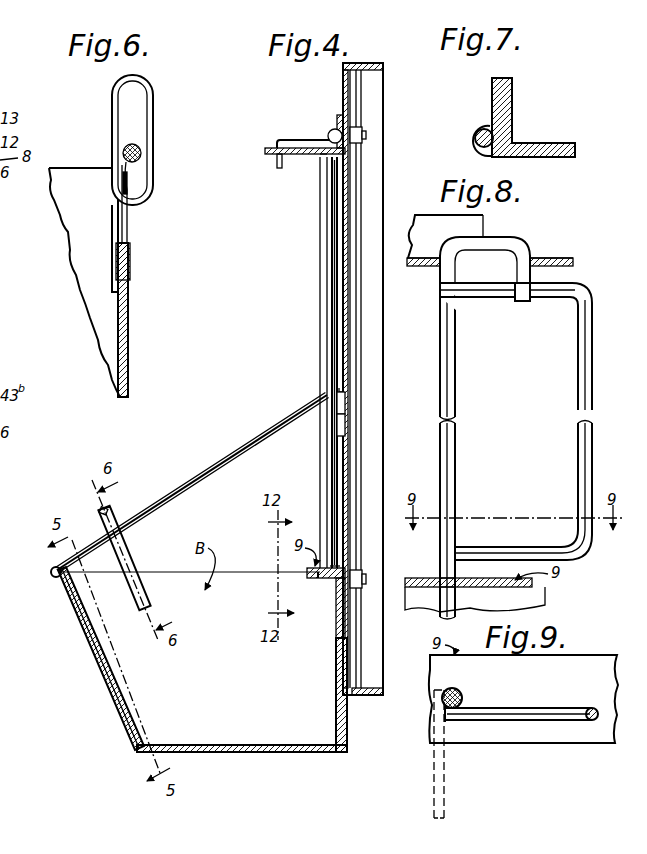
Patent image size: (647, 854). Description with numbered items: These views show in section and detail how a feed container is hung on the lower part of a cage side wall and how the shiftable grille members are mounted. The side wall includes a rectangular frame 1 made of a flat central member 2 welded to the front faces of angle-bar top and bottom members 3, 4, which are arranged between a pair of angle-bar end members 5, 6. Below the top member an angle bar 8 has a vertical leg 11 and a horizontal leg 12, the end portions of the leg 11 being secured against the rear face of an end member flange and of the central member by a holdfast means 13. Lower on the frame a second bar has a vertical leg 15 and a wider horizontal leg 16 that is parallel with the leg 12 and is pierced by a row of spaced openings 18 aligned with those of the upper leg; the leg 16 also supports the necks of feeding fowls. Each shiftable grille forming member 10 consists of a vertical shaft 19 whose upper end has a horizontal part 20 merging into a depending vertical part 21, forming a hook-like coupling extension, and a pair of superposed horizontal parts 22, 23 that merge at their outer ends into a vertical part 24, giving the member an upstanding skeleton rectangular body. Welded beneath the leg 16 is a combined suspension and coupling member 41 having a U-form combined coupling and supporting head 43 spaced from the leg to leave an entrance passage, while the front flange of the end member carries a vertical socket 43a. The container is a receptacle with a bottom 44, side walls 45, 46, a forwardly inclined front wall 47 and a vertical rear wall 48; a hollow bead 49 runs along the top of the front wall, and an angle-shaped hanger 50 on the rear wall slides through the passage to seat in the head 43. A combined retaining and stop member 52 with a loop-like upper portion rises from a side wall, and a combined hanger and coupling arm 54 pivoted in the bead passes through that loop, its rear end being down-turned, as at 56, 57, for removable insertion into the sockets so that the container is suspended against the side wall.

In FIG. 6, the rectangular frame 1 is at (14, 283).
In FIG. 4, the rectangular frame 1 is at (372, 305).
In FIG. 7, the rectangular frame 1 is at (514, 97).
In FIG. 8, the rectangular frame 1 is at (557, 262).
In FIG. 9, the rectangular frame 1 is at (556, 735).
In FIG. 6, the central member 2 is at (113, 333).
In FIG. 4, the top member 3 is at (343, 79).
In FIG. 4, the bottom member 4 is at (368, 697).
In FIG. 4, the end member 5 is at (377, 186).
In FIG. 8, the end member 5 is at (472, 604).
In FIG. 7, the end member 6 is at (512, 113).
In FIG. 4, the bar 8 is at (350, 162).
In FIG. 8, the bar 8 is at (470, 224).
In FIG. 4, the shiftable grille forming member 10 is at (331, 326).
In FIG. 8, the shiftable grille forming member 10 is at (457, 379).
In FIG. 4, the vertical leg 11 is at (352, 125).
In FIG. 8, the vertical leg 11 is at (445, 230).
In FIG. 4, the horizontal leg 12 is at (320, 156).
In FIG. 8, the horizontal leg 12 is at (420, 266).
In FIG. 4, the holdfast means 13 is at (330, 134).
In FIG. 4, the vertical leg 15 is at (355, 580).
In FIG. 8, the vertical leg 15 is at (505, 597).
In FIG. 4, the horizontal leg 16 is at (308, 568).
In FIG. 8, the horizontal leg 16 is at (530, 588).
In FIG. 9, the horizontal leg 16 is at (447, 672).
In FIG. 8, the openings 18 is at (440, 580).
In FIG. 9, the openings 18 is at (464, 705).
In FIG. 4, the vertical shaft 19 is at (333, 352).
In FIG. 8, the vertical shaft 19 is at (450, 340).
In FIG. 9, the vertical shaft 19 is at (460, 693).
In FIG. 4, the horizontal part 20 is at (280, 141).
In FIG. 8, the horizontal part 20 is at (500, 245).
In FIG. 4, the depending vertical part 21 is at (276, 163).
In FIG. 8, the depending vertical part 21 is at (515, 302).
In FIG. 8, the horizontal part 22 is at (555, 290).
In FIG. 8, the horizontal part 23 is at (525, 557).
In FIG. 9, the horizontal part 23 is at (535, 697).
In FIG. 4, the vertical part 24 is at (321, 278).
In FIG. 8, the vertical part 24 is at (580, 368).
In FIG. 9, the vertical part 24 is at (594, 708).
In FIG. 4, the combined suspension and coupling member 41 is at (316, 580).
In FIG. 4, the combined coupling and supporting head 43 is at (332, 580).
In FIG. 4, the socket 43a is at (343, 419).
In FIG. 7, the socket 43a is at (476, 128).
In FIG. 4, the bottom 44 is at (243, 732).
In FIG. 6, the side wall 45 is at (124, 296).
In FIG. 4, the side wall 45 is at (143, 712).
In FIG. 4, the side wall 46 is at (177, 659).
In FIG. 6, the front wall 47 is at (66, 228).
In FIG. 4, the front wall 47 is at (108, 662).
In FIG. 4, the rear wall 48 is at (340, 682).
In FIG. 6, the hollow bead 49 is at (73, 160).
In FIG. 4, the hollow bead 49 is at (51, 571).
In FIG. 4, the angle-shaped hanger 50 is at (336, 625).
In FIG. 6, the combined retaining and stop member 52 is at (150, 179).
In FIG. 4, the combined retaining and stop member 52 is at (98, 512).
In FIG. 4, the combined hanger and coupling arm 54 is at (228, 458).
In FIG. 4, the down-turned end 56 is at (345, 393).
In FIG. 6, the down-turned end 57 is at (0, 368).